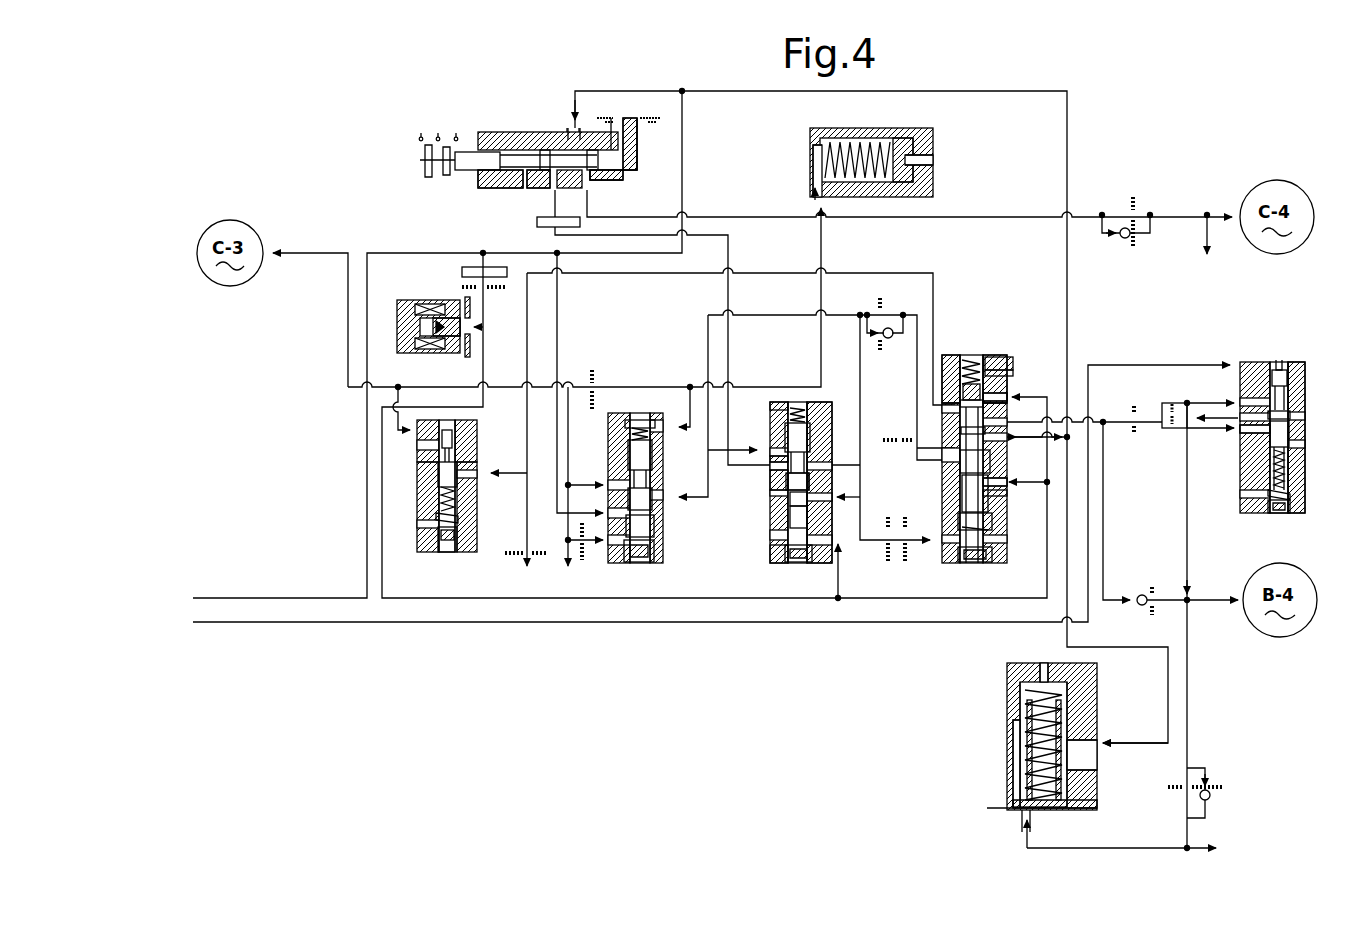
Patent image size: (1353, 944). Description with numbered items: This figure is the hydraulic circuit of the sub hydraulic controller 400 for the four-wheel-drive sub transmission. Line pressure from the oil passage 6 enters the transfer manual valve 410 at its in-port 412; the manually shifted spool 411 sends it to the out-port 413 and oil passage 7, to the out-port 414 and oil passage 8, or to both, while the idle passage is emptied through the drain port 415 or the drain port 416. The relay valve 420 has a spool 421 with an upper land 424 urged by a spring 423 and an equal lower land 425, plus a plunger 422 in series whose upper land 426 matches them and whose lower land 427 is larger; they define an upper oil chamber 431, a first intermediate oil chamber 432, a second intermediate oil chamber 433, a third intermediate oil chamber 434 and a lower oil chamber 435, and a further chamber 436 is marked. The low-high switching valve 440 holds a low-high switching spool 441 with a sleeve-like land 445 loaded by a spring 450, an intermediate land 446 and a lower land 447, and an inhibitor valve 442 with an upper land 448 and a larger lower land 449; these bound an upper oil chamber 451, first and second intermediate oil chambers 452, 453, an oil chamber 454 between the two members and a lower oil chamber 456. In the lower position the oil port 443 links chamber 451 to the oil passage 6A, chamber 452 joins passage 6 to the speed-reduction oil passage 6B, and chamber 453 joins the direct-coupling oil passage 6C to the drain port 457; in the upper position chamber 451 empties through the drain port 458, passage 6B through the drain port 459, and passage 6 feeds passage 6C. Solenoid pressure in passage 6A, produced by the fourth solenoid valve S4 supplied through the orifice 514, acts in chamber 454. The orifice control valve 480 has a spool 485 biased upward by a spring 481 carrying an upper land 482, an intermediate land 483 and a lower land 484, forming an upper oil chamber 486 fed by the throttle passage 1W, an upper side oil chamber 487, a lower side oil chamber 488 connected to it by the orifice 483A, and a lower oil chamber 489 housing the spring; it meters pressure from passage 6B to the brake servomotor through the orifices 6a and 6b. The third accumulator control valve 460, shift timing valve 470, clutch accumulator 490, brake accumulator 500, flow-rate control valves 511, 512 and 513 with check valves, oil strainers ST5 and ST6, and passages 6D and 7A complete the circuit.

The sub hydraulic controller 400 is at (1154, 108).
The transfer manual valve 410 is at (539, 145).
The spool 411 is at (470, 164).
The in-port 412 is at (572, 128).
The out-port 413 is at (548, 188).
The out-port 414 is at (600, 185).
The drain port 415 is at (515, 186).
The drain port 416 is at (628, 136).
The relay valve 420 is at (806, 525).
The spool 421 is at (836, 482).
The plunger 422 is at (812, 484).
The spring 423 is at (782, 412).
The upper land 424 is at (788, 436).
The lower land 425 is at (776, 459).
The upper land 426 is at (786, 500).
The lower land 427 is at (786, 548).
The upper oil chamber 431 is at (790, 414).
The first intermediate oil chamber 432 is at (808, 463).
The second intermediate oil chamber 433 is at (784, 488).
The third intermediate oil chamber 434 is at (788, 520).
The lower oil chamber 435 is at (783, 562).
The port 436 is at (778, 478).
The low-high switching valve 440 is at (968, 470).
The low-high switching spool 441 is at (955, 425).
The inhibitor valve 442 is at (990, 519).
The oil port 443 is at (1000, 357).
The sleeve-like land 445 is at (990, 356).
The intermediate land 446 is at (1013, 405).
The lower land 447 is at (995, 465).
The upper land 448 is at (990, 496).
The lower land 449 is at (990, 532).
The spring 450 is at (972, 358).
The upper oil chamber 451 is at (955, 360).
The first intermediate oil chamber 452 is at (950, 411).
The second intermediate oil chamber 453 is at (955, 440).
The oil chamber 454 is at (964, 485).
The lower oil chamber 456 is at (992, 554).
The drain port 457 is at (962, 460).
The drain port 458 is at (1003, 372).
The drain port 459 is at (950, 398).
The third accumulator control valve 460 is at (626, 575).
The shift timing valve 470 is at (445, 572).
The orifice control valve 480 is at (1269, 439).
The spring 481 is at (1290, 494).
The upper land 482 is at (1292, 368).
The intermediate land 483 is at (1292, 418).
The orifice 483A is at (1262, 430).
The lower land 484 is at (1290, 450).
The spool 485 is at (1300, 400).
The upper oil chamber 486 is at (1286, 358).
The upper side oil chamber 487 is at (1290, 386).
The lower side oil chamber 488 is at (1290, 432).
The lower oil chamber 489 is at (1290, 507).
The accumulator 490 is at (942, 136).
The accumulator 500 is at (986, 788).
The flow-rate control valve 511 is at (897, 315).
The flow-rate control valve 512 is at (1122, 240).
The flow-rate control valve 513 is at (1210, 796).
The orifice 514 is at (494, 290).
The oil passage 6 is at (683, 91).
The oil passage 6A is at (838, 610).
The speed-reduction oil passage 6B is at (1103, 425).
The direct-coupling oil passage 6C is at (708, 335).
The oil passage 6D is at (568, 387).
The orifice 6a is at (1132, 404).
The orifice 6b is at (1176, 397).
The oil passage 7 is at (553, 206).
The oil passage 7A is at (860, 492).
The oil passage 8 is at (590, 208).
The oil passage 1W is at (297, 622).
The oil strainer ST5 is at (462, 272).
The oil strainer ST6 is at (537, 227).
The fourth solenoid valve S4 is at (397, 340).